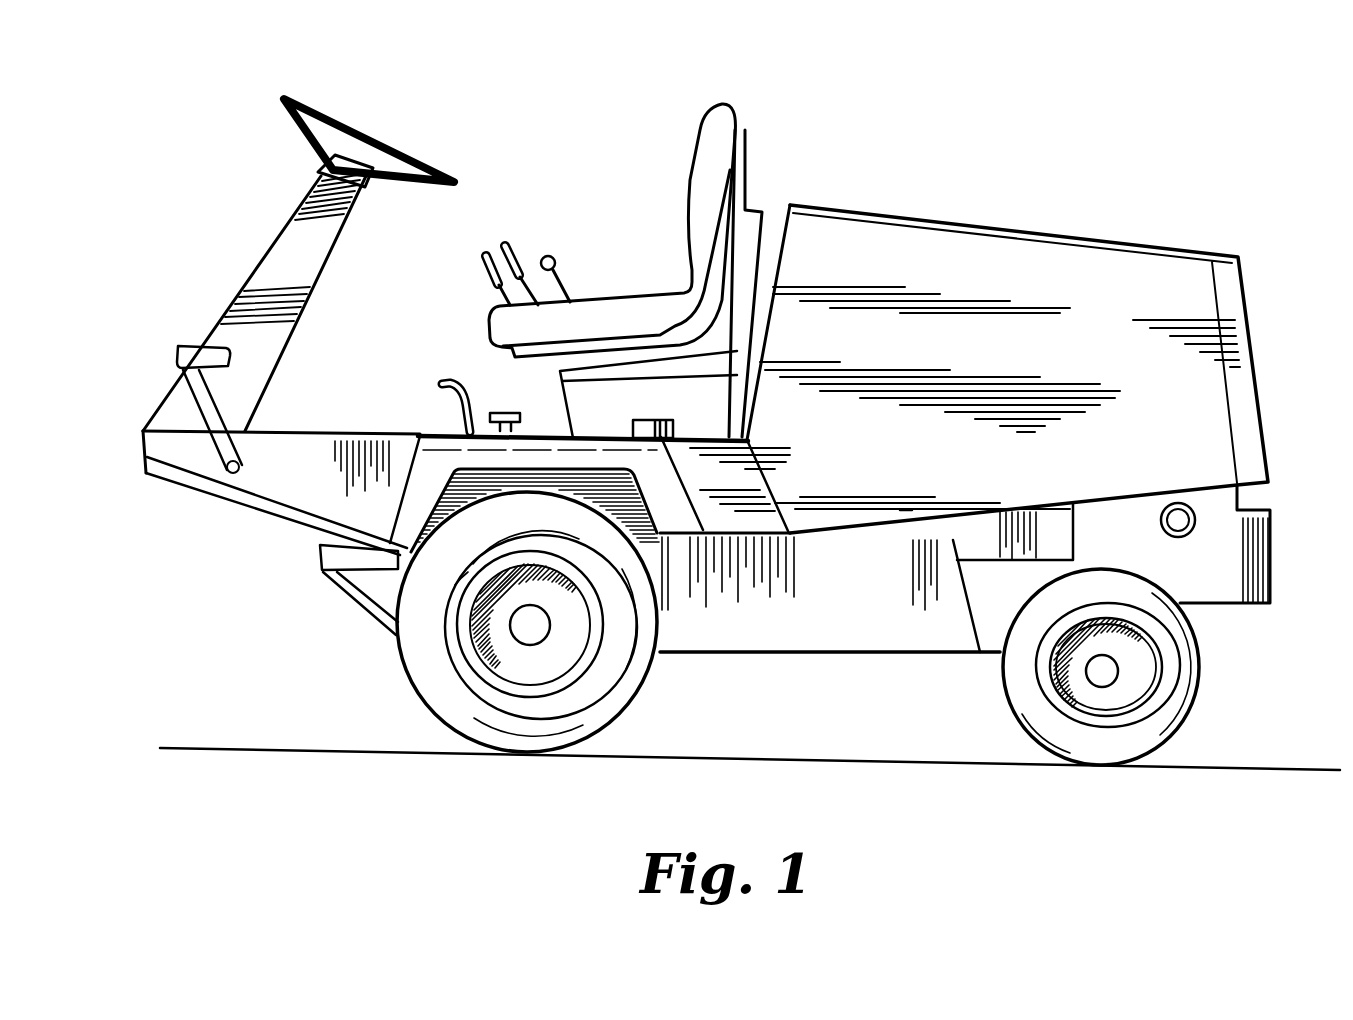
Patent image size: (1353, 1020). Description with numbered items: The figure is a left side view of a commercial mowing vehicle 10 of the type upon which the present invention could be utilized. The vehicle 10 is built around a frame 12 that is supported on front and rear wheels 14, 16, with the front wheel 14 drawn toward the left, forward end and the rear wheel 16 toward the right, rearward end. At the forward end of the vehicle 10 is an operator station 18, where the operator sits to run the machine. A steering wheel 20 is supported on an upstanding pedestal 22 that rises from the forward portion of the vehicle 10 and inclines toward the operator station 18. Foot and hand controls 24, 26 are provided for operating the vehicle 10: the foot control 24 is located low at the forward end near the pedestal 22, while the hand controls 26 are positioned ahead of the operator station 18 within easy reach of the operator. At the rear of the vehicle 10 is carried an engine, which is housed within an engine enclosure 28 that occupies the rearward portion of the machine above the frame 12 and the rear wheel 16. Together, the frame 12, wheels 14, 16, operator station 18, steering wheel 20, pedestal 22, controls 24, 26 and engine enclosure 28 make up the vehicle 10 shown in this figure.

The commercial mowing vehicle 10 is at (918, 178).
The frame 12 is at (1000, 656).
The front wheel 14 is at (417, 665).
The rear wheel 16 is at (1168, 700).
The operator station 18 is at (576, 158).
The steering wheel 20 is at (311, 98).
The upstanding pedestal 22 is at (305, 256).
The foot control 24 is at (200, 395).
The hand control 26 is at (517, 244).
The engine enclosure 28 is at (1275, 290).